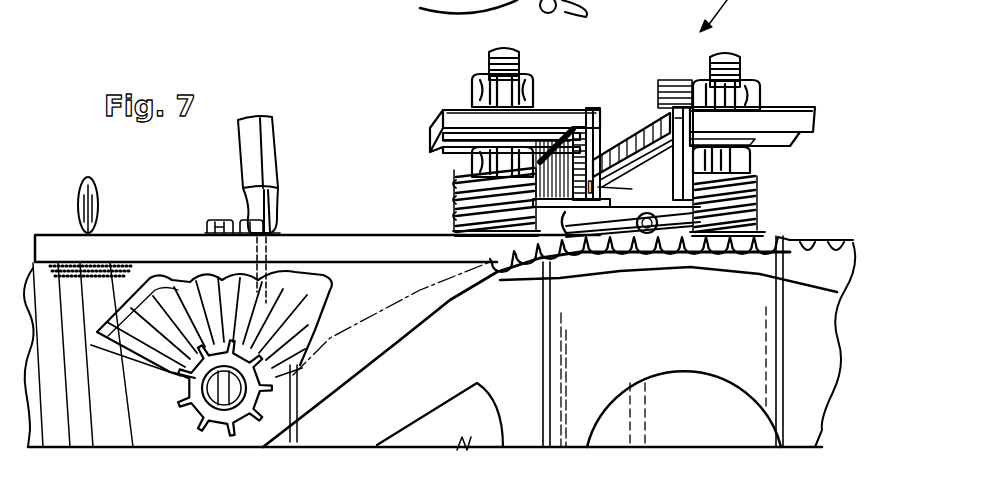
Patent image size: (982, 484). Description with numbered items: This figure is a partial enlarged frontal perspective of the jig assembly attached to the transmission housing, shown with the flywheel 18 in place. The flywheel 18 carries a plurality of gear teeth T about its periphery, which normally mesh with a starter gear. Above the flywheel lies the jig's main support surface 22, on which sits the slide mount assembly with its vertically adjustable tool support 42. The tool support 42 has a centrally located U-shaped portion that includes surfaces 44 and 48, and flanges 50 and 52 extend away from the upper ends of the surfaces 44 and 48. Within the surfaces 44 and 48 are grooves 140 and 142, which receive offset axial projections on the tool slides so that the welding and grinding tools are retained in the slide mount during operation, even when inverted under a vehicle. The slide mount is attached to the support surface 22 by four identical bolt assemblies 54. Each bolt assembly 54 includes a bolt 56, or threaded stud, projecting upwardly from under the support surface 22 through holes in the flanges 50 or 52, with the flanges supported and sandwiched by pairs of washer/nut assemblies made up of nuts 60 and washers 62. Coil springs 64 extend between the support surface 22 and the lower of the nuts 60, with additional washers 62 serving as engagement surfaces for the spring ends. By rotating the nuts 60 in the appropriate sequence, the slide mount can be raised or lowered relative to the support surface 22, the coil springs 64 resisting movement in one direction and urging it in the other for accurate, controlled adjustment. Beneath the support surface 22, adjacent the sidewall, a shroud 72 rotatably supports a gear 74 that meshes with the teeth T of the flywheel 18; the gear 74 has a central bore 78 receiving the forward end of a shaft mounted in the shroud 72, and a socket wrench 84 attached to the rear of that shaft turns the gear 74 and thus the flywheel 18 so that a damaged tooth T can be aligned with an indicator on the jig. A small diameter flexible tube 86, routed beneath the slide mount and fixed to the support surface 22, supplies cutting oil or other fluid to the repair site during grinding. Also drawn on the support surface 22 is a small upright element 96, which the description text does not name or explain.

The flywheel 18 is at (452, 372).
The support surface 22 is at (311, 243).
The vertically adjustable tool support 42 is at (589, 104).
The surface 44 is at (607, 132).
The surface 48 is at (648, 118).
The flange 50 is at (457, 110).
The flange 52 is at (788, 112).
The bolt assembly 54 is at (424, 180).
The bolt 56 is at (490, 64).
The nut 60 is at (529, 86).
The washer 62 is at (441, 138).
The coil spring 64 is at (782, 209).
The shroud 72 is at (183, 272).
The gear 74 is at (188, 386).
The central bore 78 is at (197, 418).
The socket wrench 84 is at (282, 162).
The flexible tube 86 is at (568, 255).
The knob 96 is at (78, 200).
The groove 140 is at (562, 135).
The groove 142 is at (700, 120).
The gear teeth T is at (532, 268).